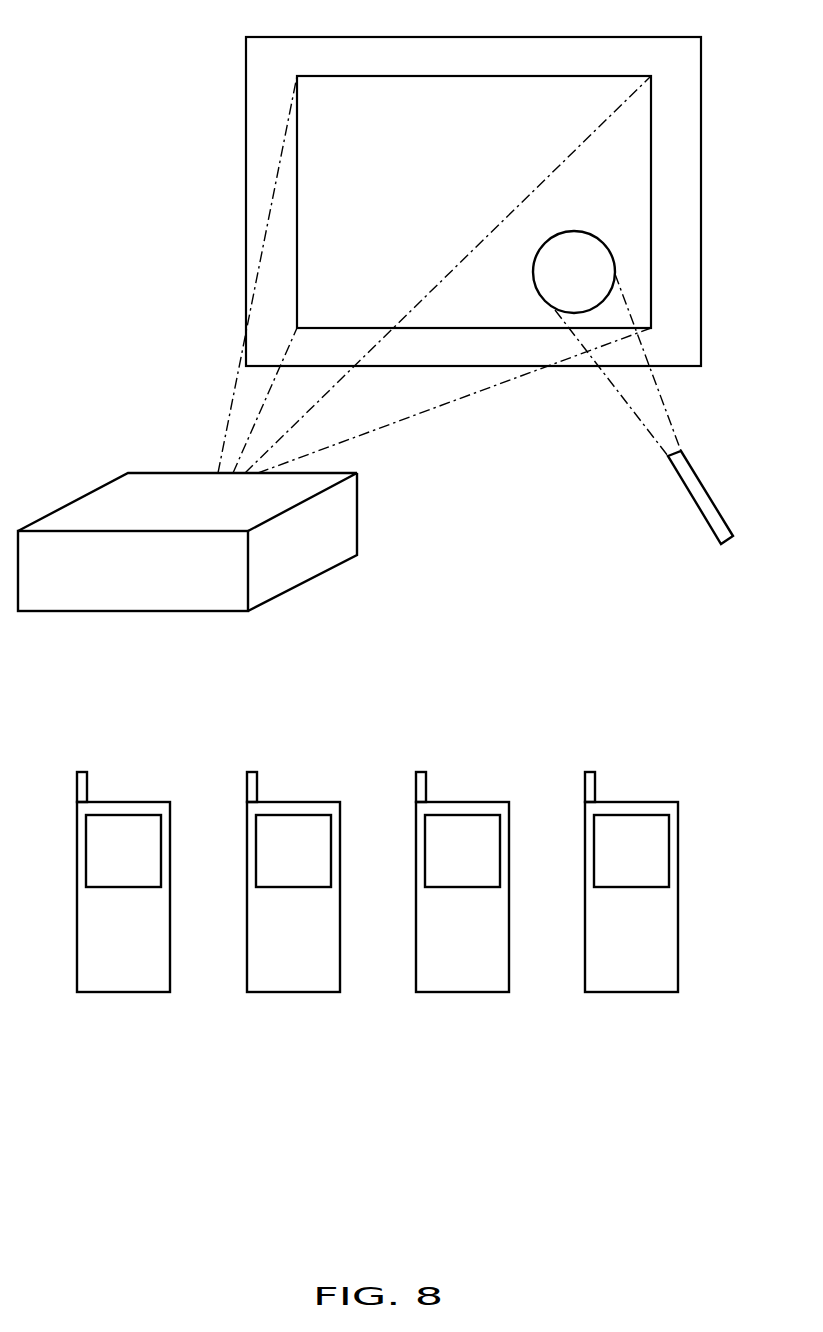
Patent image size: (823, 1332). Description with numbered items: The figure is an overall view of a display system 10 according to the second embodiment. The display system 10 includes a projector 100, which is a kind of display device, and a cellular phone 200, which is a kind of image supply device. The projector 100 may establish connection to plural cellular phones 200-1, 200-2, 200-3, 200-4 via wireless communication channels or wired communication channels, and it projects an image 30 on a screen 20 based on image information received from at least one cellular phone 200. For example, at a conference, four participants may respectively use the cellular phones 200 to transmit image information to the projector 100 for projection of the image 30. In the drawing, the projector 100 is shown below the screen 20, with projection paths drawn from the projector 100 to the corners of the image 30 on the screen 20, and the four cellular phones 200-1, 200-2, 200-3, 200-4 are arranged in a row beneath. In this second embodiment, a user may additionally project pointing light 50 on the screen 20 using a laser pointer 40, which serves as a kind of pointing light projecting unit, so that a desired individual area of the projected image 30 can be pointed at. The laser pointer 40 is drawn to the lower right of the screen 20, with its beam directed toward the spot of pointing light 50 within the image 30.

The display system 10 is at (515, 553).
The screen 20 is at (633, 37).
The image 30 is at (572, 76).
The laser pointer 40 is at (707, 487).
The pointing light 50 is at (587, 230).
The projector 100 is at (360, 513).
The cellular phone 200 is at (545, 738).
The cellular phone 200-1 is at (123, 802).
The cellular phone 200-2 is at (293, 802).
The cellular phone 200-3 is at (462, 802).
The cellular phone 200-4 is at (631, 802).